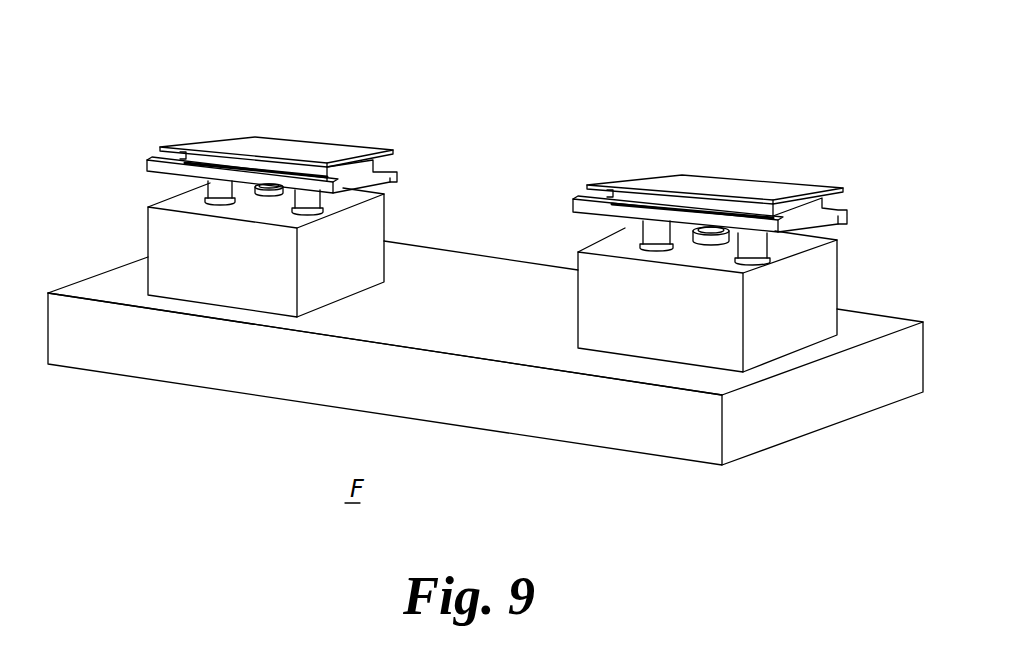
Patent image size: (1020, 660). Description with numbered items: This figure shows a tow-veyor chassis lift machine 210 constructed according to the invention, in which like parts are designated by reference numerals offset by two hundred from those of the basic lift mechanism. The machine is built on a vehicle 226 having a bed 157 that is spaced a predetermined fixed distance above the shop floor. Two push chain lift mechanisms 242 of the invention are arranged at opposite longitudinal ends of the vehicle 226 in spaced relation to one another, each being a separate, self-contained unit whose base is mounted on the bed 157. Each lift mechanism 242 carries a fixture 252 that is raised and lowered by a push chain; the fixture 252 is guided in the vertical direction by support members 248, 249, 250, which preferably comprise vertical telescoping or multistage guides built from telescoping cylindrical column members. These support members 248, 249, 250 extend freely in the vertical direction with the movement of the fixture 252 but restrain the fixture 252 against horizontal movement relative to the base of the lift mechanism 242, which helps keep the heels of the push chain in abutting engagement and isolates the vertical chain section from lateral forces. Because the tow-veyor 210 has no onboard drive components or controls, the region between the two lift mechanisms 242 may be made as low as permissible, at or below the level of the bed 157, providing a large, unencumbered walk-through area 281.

The tow-veyor chassis lift machine 210 is at (464, 200).
The vehicle 226 is at (282, 368).
The bed 157 is at (513, 349).
The walk-through area 281 is at (505, 314).
The push chain lift mechanism 242 is at (590, 231).
The fixture 252 is at (296, 151).
The support member 249 is at (208, 182).
The support member 248 is at (310, 198).
The support member 250 is at (257, 192).